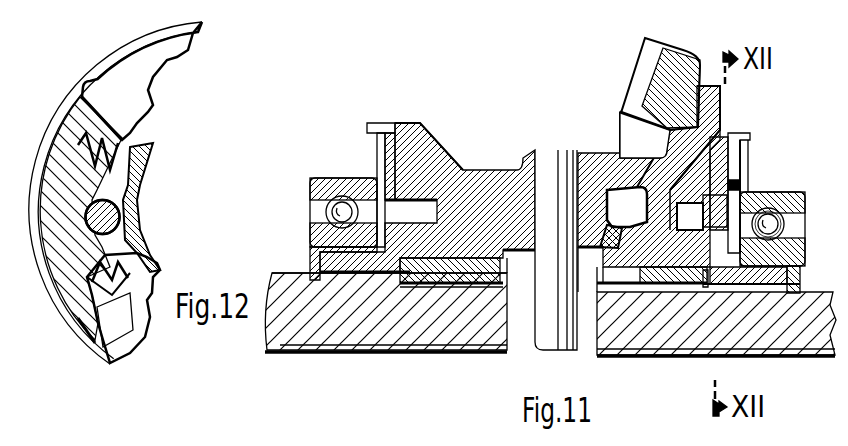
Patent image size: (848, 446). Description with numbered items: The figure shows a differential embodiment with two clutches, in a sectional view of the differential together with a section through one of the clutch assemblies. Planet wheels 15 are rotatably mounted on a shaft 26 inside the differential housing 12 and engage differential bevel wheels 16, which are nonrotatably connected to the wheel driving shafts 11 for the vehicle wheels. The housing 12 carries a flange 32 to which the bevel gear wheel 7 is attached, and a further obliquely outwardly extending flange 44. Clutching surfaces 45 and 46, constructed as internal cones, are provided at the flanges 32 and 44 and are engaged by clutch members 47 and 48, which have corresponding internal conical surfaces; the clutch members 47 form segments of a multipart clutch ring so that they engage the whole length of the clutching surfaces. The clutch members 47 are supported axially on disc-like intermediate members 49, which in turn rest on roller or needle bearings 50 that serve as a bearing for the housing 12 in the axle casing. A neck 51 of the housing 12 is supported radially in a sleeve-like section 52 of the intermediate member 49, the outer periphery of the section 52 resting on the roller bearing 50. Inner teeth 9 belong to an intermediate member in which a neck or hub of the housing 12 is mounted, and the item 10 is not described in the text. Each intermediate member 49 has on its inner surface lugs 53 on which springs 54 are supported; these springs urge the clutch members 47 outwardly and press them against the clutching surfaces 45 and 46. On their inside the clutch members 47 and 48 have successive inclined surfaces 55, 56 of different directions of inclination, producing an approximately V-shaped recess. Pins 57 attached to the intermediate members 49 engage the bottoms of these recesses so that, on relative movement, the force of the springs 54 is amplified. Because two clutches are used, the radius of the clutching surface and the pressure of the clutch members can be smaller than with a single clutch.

In FIG. 11, the bevel gear wheel 7 is at (673, 67).
In FIG. 11, the inner teeth 9 is at (318, 278).
In FIG. 11, the base plate top surface 10 is at (338, 282).
In FIG. 11, the wheel driving shafts 11 is at (397, 320).
In FIG. 11, the differential housing 12 is at (477, 187).
In FIG. 11, the planet wheels 15 is at (523, 207).
In FIG. 11, the differential bevel wheels 16 is at (610, 188).
In FIG. 11, the shaft 26 is at (552, 167).
In FIG. 11, the flange 32 is at (718, 97).
In FIG. 11, the obliquely outwardly extending flange 44 is at (430, 153).
In FIG. 11, the clutching surface 45 is at (395, 133).
In FIG. 11, the clutching surface 46 is at (732, 143).
In FIG. 11, the clutch members 47 is at (400, 170).
In FIG. 12, the clutch members 48 is at (81, 95).
In FIG. 11, the clutch members 48 is at (749, 156).
In FIG. 12, the intermediate members 49 is at (77, 92).
In FIG. 11, the intermediate members 49 is at (379, 150).
In FIG. 11, the roller or needle bearings 50 is at (322, 190).
In FIG. 11, the neck 51 is at (360, 263).
In FIG. 11, the sleeve-like section 52 is at (310, 249).
In FIG. 12, the lugs 53 is at (140, 170).
In FIG. 11, the lugs 53 is at (748, 247).
In FIG. 12, the springs 54 is at (122, 142).
In FIG. 12, the inclined surface 55 is at (130, 207).
In FIG. 12, the inclined surface 56 is at (113, 240).
In FIG. 12, the pins 57 is at (118, 230).
In FIG. 11, the pins 57 is at (742, 183).